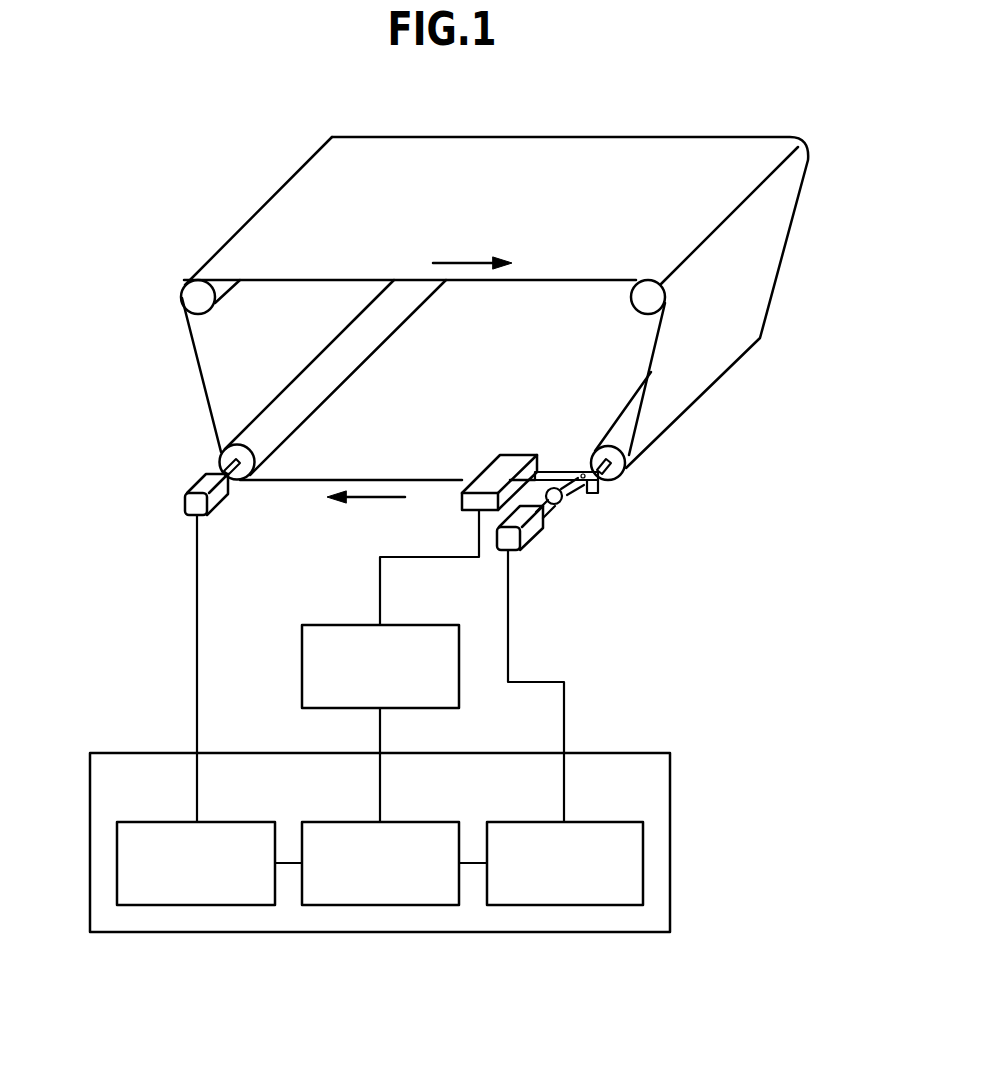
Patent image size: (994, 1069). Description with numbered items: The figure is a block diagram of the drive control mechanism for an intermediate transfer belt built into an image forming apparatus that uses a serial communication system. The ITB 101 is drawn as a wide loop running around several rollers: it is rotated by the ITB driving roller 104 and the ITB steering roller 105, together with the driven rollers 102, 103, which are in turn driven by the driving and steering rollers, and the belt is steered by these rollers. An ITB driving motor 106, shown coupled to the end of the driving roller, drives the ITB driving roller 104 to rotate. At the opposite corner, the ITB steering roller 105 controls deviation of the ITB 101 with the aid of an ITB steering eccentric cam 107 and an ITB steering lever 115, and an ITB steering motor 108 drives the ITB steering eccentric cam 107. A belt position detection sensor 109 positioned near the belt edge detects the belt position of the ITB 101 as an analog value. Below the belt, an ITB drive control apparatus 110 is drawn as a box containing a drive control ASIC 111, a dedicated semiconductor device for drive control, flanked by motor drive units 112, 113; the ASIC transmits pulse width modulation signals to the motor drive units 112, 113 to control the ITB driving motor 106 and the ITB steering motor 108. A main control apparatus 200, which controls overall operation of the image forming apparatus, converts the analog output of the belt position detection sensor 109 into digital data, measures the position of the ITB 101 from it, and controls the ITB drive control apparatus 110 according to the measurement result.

The ITB 101 is at (612, 137).
The driven roller 102 is at (183, 297).
The driven roller 103 is at (645, 314).
The ITB driving roller 104 is at (255, 417).
The ITB steering roller 105 is at (624, 459).
The ITB driving motor 106 is at (190, 503).
The ITB steering eccentric cam 107 is at (562, 500).
The ITB steering motor 108 is at (531, 538).
The belt position detection sensor 109 is at (518, 455).
The ITB steering lever 115 is at (599, 487).
The main control apparatus 200 is at (333, 625).
The ITB drive control apparatus 110 is at (250, 753).
The drive control ASIC 111 is at (421, 822).
The motor drive unit 112 is at (240, 822).
The motor drive unit 113 is at (607, 822).